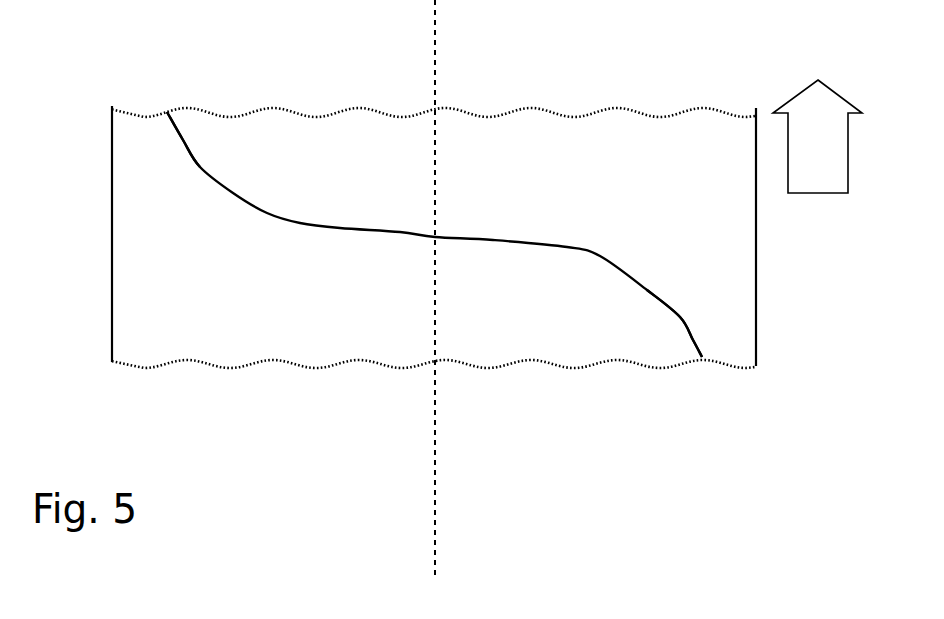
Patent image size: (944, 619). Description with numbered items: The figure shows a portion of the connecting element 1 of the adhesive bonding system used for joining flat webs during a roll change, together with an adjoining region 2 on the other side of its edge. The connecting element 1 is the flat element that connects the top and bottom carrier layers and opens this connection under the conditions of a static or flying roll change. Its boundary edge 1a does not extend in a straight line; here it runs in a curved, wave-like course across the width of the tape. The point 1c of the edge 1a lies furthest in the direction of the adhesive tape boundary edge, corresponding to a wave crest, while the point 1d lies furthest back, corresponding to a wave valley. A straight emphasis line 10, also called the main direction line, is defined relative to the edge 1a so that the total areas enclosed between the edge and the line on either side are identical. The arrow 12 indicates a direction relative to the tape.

The connecting element 1 is at (193, 306).
The second layer / second region of substrate 2 is at (697, 199).
The connecting element boundary edge 1a is at (493, 240).
The points lying furthest toward the adhesive bonding system edge 1c is at (717, 340).
The points lying furthest back 1d is at (148, 133).
The emphasis line 10 is at (434, 508).
The direction of movement (arrow) 12 is at (836, 165).